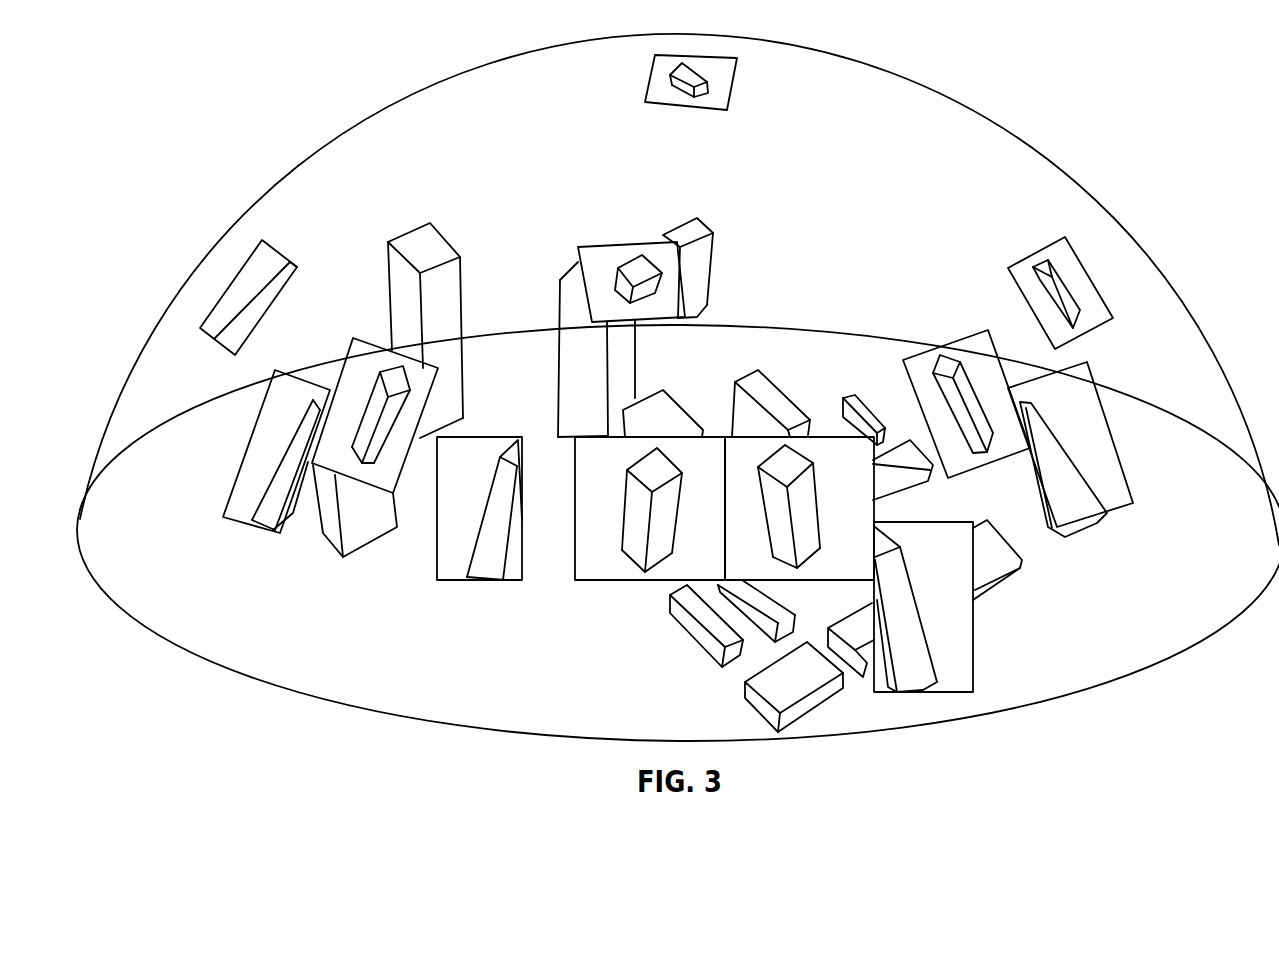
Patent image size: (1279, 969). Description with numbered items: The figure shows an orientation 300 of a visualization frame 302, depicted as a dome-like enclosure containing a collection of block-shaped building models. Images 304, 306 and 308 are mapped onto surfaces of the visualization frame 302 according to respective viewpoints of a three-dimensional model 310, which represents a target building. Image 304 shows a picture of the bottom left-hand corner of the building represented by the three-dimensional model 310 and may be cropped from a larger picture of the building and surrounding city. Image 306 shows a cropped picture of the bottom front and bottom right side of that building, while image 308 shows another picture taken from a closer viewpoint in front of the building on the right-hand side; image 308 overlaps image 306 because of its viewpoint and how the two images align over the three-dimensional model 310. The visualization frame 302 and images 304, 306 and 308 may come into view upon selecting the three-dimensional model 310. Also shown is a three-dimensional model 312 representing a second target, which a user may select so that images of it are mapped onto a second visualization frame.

The orientation 300 is at (170, 122).
The visualization frame 302 is at (307, 155).
The image 304 is at (602, 582).
The image 306 is at (820, 582).
The image 308 is at (972, 637).
The 3D model 310 is at (637, 398).
The 3D model 312 is at (783, 390).